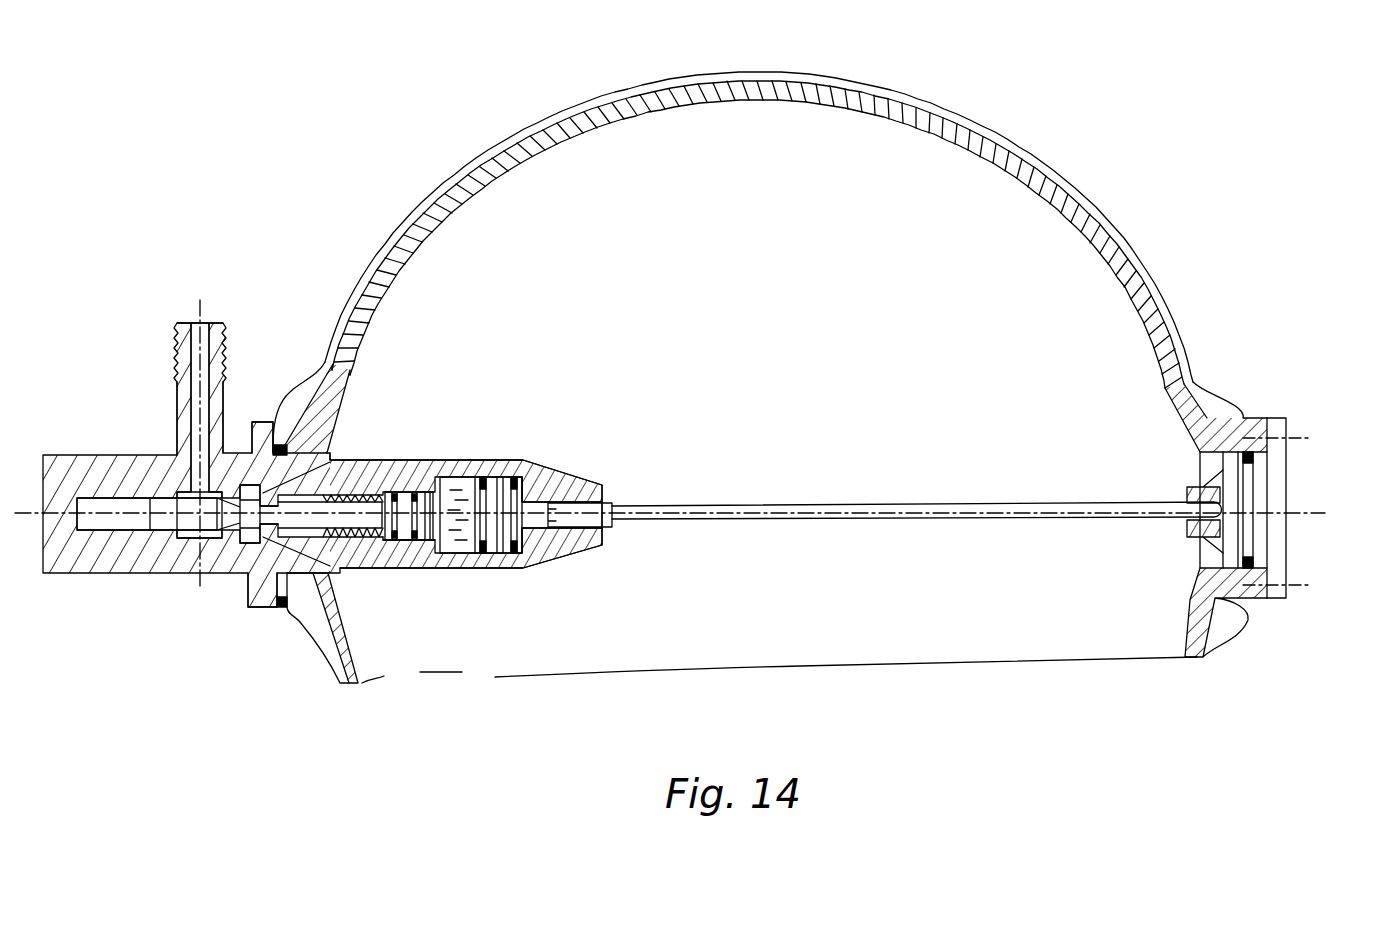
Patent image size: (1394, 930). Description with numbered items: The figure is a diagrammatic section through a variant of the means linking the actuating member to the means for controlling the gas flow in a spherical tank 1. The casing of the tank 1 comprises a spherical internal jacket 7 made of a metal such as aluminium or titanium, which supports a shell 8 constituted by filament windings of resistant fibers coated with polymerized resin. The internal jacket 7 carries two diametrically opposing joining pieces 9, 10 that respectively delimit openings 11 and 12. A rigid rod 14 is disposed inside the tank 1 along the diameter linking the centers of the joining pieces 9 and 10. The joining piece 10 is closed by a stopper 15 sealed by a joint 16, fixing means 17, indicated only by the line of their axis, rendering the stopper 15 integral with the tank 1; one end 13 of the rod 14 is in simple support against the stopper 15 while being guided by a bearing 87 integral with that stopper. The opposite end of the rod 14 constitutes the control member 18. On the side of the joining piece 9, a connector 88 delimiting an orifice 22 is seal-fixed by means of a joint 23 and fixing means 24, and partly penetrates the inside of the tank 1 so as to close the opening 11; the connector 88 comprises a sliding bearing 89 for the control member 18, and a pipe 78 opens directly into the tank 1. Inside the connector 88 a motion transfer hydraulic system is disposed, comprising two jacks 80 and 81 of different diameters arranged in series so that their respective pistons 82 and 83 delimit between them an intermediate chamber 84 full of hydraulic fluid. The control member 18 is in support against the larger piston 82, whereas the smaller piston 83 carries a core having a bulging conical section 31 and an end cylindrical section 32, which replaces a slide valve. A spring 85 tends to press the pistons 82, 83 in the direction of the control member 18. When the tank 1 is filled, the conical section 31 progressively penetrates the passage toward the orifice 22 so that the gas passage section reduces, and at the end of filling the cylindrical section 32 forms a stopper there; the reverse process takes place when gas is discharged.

The tank 1 is at (968, 82).
The spherical internal jacket 7 is at (1013, 178).
The shell 8 is at (1052, 162).
The joining piece 9 is at (298, 398).
The joining piece 10 is at (1235, 432).
The opening 11 is at (320, 430).
The opening 12 is at (1212, 557).
The end of the rod 13 is at (1197, 490).
The rigid rod 14 is at (890, 504).
The stopper 15 is at (1285, 486).
The joint 16 is at (1252, 596).
The fixing means 17 is at (1297, 440).
The control member 18 is at (612, 500).
The orifice 22 is at (194, 348).
The joint 23 is at (285, 607).
The fixing means 24 is at (252, 436).
The conical section of the core 31 is at (238, 530).
The end cylindrical section of the core 32 is at (168, 525).
The pipe 78 is at (325, 478).
The jack 80 is at (476, 580).
The jack 81 is at (402, 580).
The piston 82 is at (497, 535).
The piston 83 is at (410, 535).
The intermediate chamber 84 is at (470, 462).
The spring 85 is at (370, 555).
The bearing 87 is at (1197, 523).
The connector 88 is at (128, 428).
The sliding bearing 89 is at (582, 470).